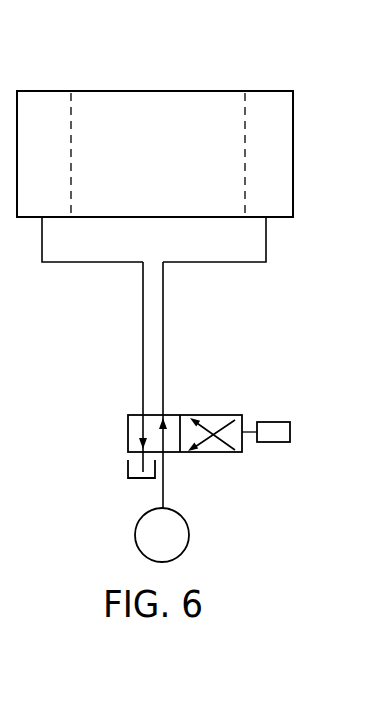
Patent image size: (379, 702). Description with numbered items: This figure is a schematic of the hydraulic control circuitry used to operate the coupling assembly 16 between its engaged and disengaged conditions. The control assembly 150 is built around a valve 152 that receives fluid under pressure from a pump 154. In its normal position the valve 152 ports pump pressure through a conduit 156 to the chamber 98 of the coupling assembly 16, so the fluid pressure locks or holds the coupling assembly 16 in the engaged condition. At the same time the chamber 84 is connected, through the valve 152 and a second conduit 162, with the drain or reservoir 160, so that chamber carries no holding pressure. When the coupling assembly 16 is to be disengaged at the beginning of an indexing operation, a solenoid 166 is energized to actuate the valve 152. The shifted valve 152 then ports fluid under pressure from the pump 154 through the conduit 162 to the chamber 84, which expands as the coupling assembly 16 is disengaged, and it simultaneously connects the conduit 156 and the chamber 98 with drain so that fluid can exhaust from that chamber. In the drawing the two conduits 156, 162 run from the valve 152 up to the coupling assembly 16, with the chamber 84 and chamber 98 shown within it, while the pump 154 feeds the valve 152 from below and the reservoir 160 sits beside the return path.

The coupling assembly 16 is at (147, 84).
The fluid tight chamber 84 is at (38, 110).
The second chamber 98 is at (263, 110).
The control assembly 150 is at (106, 297).
The valve 152 is at (200, 457).
The pump 154 is at (140, 537).
The conduit 156 is at (163, 373).
The drain or reservoir 160 is at (128, 470).
The conduit 162 is at (143, 374).
The solenoid 166 is at (290, 431).